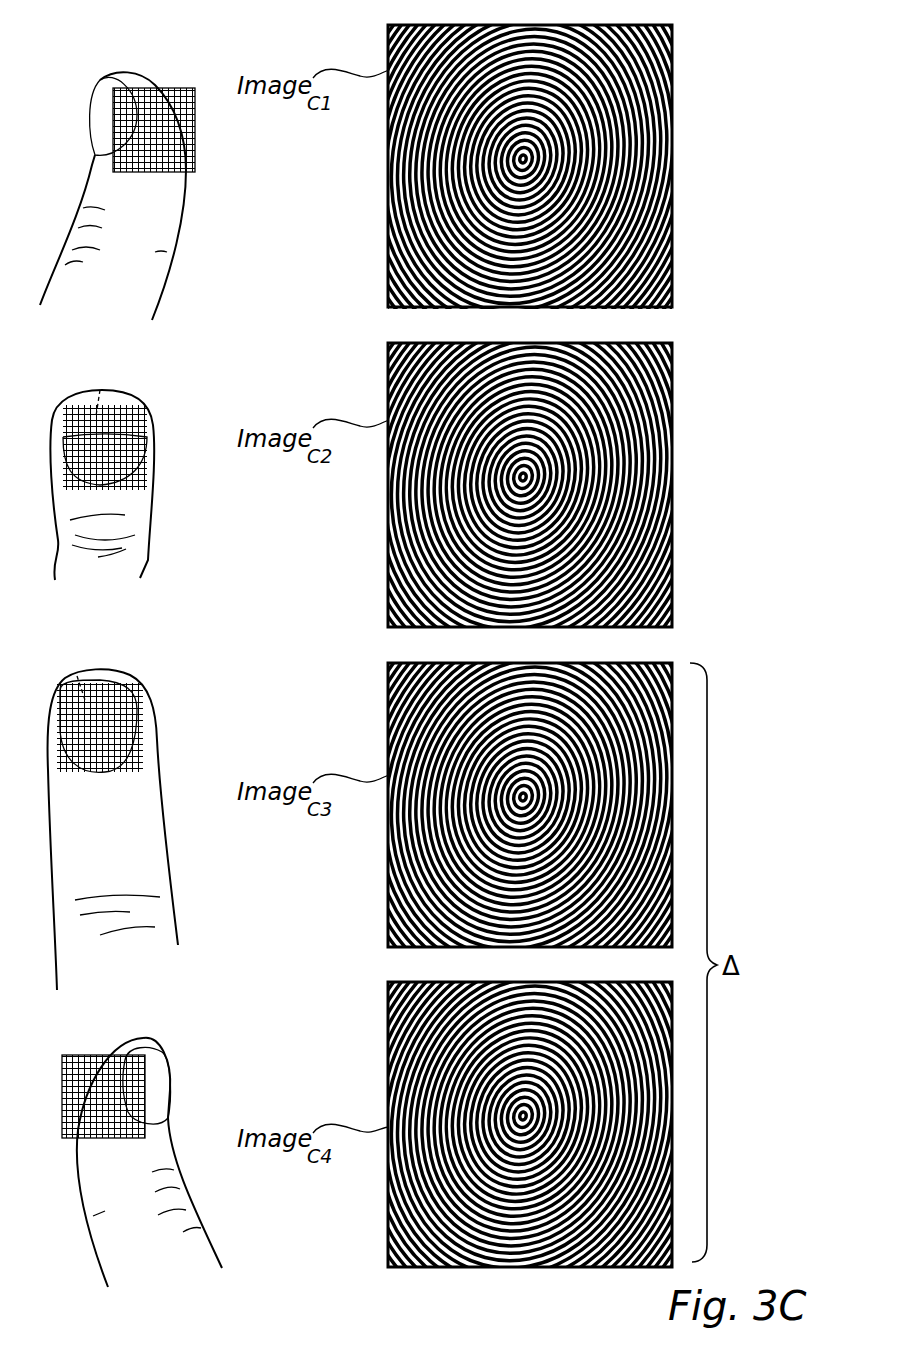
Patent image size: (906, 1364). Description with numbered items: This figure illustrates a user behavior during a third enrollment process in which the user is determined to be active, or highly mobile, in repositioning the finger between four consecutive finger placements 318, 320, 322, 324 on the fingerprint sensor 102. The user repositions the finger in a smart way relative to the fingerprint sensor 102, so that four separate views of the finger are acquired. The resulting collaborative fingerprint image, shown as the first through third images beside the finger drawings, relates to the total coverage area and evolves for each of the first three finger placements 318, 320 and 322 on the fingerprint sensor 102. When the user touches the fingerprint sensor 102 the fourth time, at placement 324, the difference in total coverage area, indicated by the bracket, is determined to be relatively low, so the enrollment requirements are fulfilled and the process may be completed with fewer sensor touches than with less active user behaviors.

The fingerprint sensor 102 is at (165, 88).
The first finger placement 318 is at (80, 392).
The second finger placement 320 is at (128, 62).
The third finger placement 322 is at (105, 668).
The fourth finger placement 324 is at (158, 1037).